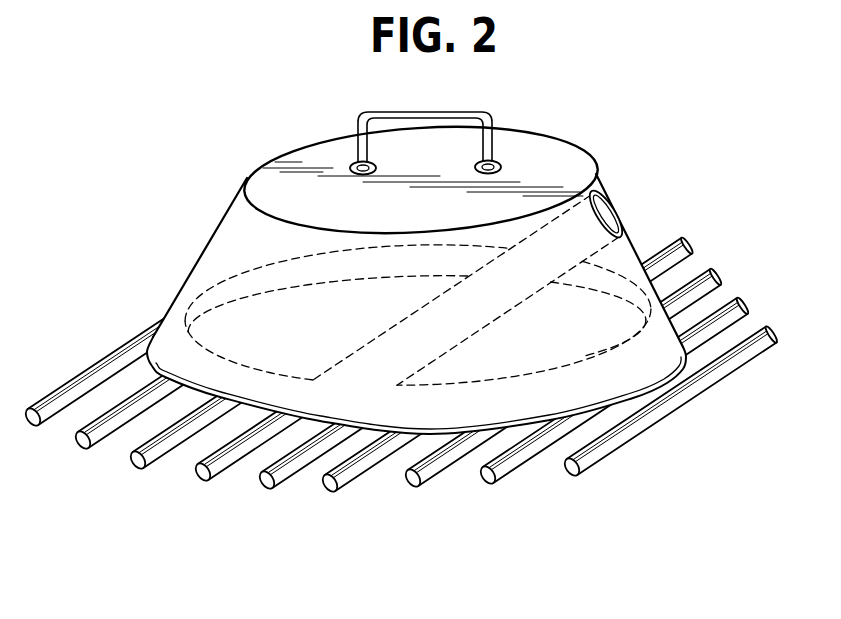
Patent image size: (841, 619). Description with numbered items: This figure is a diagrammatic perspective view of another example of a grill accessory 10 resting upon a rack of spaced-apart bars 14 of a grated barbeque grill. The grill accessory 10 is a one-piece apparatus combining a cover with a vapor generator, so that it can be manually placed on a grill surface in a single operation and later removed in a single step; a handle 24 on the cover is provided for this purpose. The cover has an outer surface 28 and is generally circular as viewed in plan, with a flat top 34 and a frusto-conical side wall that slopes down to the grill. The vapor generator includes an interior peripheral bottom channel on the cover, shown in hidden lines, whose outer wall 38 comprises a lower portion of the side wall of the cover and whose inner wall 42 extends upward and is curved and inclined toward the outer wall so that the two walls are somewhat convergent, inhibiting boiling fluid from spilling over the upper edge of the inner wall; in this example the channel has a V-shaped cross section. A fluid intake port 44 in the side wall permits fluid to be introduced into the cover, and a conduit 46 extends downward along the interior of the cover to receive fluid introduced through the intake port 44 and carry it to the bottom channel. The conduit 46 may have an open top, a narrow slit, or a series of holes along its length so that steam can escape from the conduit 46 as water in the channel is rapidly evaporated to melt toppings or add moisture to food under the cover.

The grill accessory 10 is at (400, 242).
The spaced-apart bars 14 is at (413, 483).
The handle 24 is at (463, 110).
The outer surface 28 is at (243, 212).
The flat top 34 is at (555, 170).
The outer wall 38 is at (173, 337).
The inner wall 42 is at (217, 298).
The fluid intake port 44 is at (648, 177).
The conduit 46 is at (641, 252).